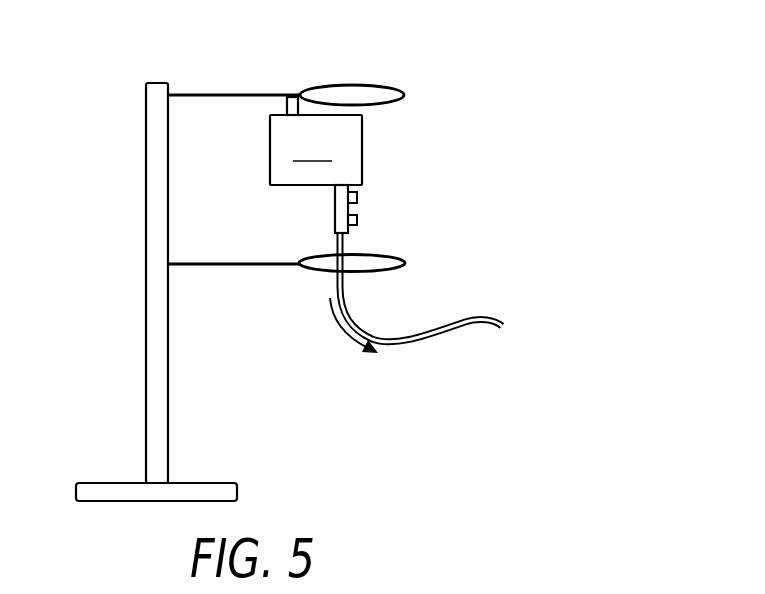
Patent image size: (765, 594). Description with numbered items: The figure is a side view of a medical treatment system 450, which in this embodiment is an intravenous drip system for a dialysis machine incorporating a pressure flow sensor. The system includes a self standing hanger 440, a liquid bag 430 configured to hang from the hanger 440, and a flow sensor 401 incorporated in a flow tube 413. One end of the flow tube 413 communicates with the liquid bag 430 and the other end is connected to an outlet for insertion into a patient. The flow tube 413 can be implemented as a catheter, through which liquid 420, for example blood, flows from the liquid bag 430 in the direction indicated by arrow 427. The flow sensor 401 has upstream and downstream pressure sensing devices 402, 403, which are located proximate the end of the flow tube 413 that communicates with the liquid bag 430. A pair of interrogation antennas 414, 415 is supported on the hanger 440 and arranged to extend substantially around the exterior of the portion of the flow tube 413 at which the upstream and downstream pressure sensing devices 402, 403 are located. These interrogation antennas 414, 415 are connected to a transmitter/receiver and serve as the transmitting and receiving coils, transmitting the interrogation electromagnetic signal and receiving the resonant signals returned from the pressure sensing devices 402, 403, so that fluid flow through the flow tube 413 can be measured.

The medical treatment system 450 is at (533, 55).
The interrogation antenna 414 is at (352, 85).
The liquid bag 430 is at (363, 132).
The liquid 420 is at (350, 306).
The upstream pressure sensing device 402 is at (357, 194).
The downstream pressure sensing device 403 is at (357, 220).
The flow sensor 401 is at (381, 195).
The flow tube 413 is at (335, 207).
The interrogation antenna 415 is at (316, 270).
The arrow 427 is at (345, 335).
The self standing hanger 440 is at (146, 325).